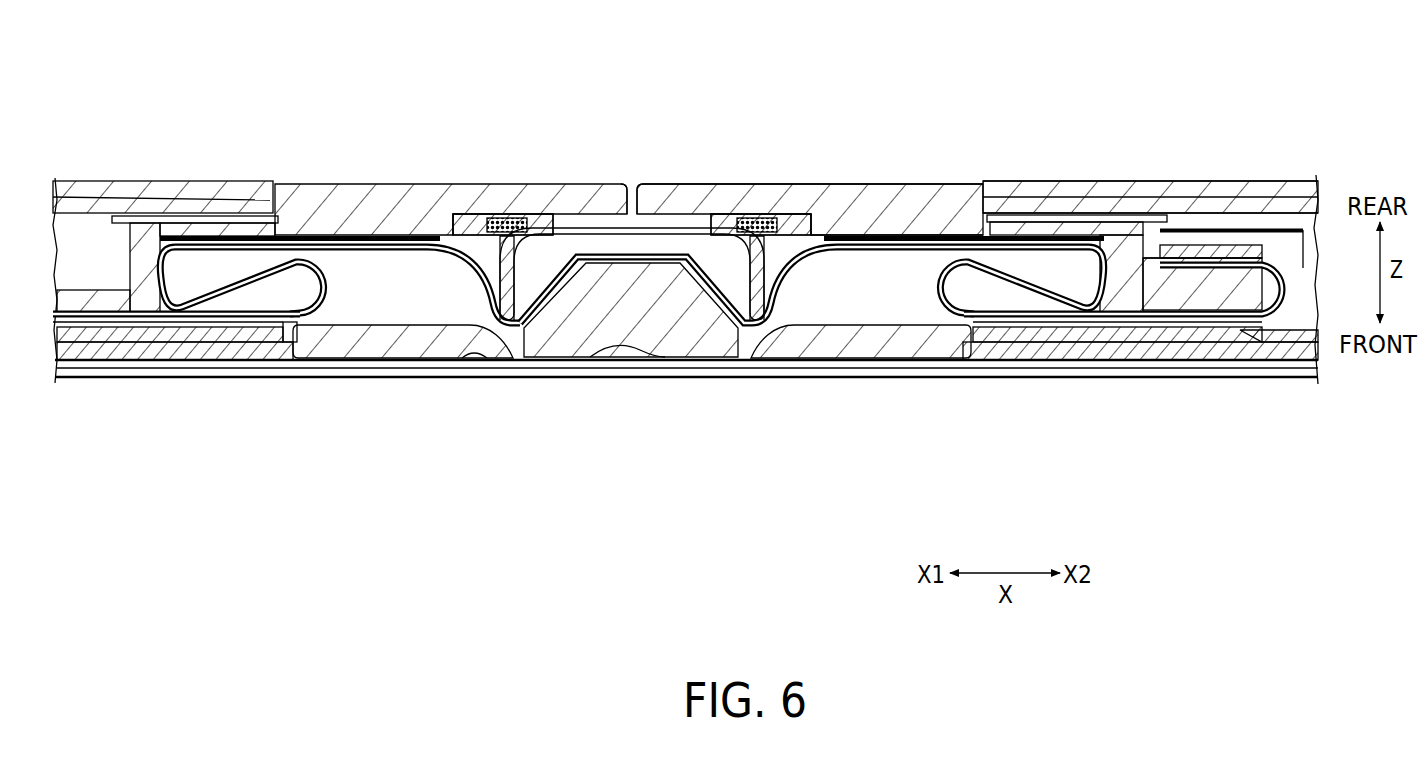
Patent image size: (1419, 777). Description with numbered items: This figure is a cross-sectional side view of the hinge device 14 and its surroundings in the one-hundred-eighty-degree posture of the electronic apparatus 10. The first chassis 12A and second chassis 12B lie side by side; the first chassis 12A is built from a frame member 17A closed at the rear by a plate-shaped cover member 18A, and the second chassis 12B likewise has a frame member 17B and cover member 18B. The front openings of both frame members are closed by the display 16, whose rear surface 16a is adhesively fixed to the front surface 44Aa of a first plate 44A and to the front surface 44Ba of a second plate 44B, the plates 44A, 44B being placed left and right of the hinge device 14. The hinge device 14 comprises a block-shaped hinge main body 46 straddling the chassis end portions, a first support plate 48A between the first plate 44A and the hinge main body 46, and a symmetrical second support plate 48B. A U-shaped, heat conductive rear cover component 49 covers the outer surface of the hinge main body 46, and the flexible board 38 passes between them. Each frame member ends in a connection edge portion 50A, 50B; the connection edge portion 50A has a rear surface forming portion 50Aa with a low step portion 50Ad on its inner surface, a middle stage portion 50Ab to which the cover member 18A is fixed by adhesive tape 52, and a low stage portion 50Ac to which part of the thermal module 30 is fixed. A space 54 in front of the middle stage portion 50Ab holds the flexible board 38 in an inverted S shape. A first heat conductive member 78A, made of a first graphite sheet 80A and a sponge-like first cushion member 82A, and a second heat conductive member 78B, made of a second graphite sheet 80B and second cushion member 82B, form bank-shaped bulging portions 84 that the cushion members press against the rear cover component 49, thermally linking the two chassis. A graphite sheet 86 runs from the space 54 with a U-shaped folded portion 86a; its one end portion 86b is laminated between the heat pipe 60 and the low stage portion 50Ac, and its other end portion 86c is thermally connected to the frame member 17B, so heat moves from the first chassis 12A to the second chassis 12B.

The electronic apparatus 10 is at (84, 48).
The first chassis 12A is at (1122, 158).
The second chassis 12B is at (200, 123).
The hinge device 14 is at (642, 424).
The display 16 is at (411, 386).
The rear surface of the display 16a is at (476, 356).
The frame member 17A is at (793, 128).
The frame member 17B is at (477, 131).
The cover member 18A is at (1246, 178).
The cover member 18B is at (97, 163).
The thermal module 30 is at (1329, 210).
The flexible board 38 is at (1303, 336).
The first plate 44A is at (1186, 378).
The front surface of the first plate 44Aa is at (1118, 358).
The second plate 44B is at (176, 380).
The front surface of the second plate 44Ba is at (245, 358).
The hinge main body 46 is at (598, 334).
The first support plate 48A is at (896, 342).
The second support plate 48B is at (380, 343).
The rear cover component 49 is at (647, 205).
The connection edge portion 50A is at (810, 155).
The rear surface forming portion 50Aa is at (817, 236).
The middle stage portion 50Ab is at (1035, 210).
The low stage portion 50Ac is at (1170, 242).
The low step portion 50Ad is at (780, 242).
The connection edge portion 50B is at (345, 208).
The adhesive tape 52 is at (206, 213).
The space 54 is at (1047, 271).
The heat pipe 60 is at (1233, 250).
The first heat conductive member 78A is at (742, 325).
The second heat conductive member 78B is at (632, 357).
The first graphite sheet 80A is at (917, 205).
The second graphite sheet 80B is at (433, 235).
The first cushion member 82A is at (757, 212).
The second cushion member 82B is at (500, 215).
The bulging portion 84 is at (525, 323).
The graphite sheet 86 is at (707, 251).
The U-shaped folded portion 86a is at (1303, 290).
The one end portion 86b is at (1183, 288).
The other end portion 86c is at (111, 320).